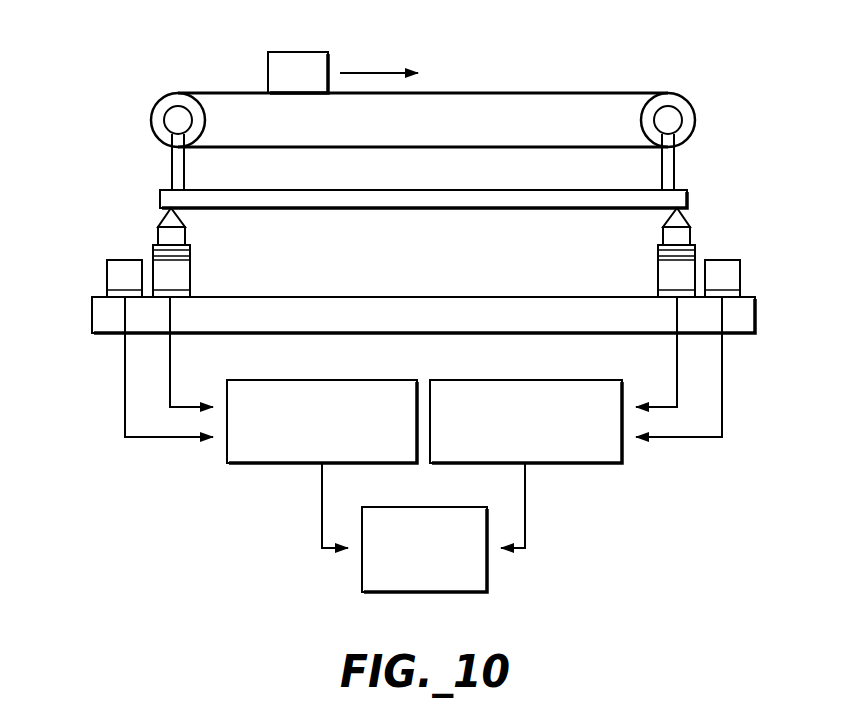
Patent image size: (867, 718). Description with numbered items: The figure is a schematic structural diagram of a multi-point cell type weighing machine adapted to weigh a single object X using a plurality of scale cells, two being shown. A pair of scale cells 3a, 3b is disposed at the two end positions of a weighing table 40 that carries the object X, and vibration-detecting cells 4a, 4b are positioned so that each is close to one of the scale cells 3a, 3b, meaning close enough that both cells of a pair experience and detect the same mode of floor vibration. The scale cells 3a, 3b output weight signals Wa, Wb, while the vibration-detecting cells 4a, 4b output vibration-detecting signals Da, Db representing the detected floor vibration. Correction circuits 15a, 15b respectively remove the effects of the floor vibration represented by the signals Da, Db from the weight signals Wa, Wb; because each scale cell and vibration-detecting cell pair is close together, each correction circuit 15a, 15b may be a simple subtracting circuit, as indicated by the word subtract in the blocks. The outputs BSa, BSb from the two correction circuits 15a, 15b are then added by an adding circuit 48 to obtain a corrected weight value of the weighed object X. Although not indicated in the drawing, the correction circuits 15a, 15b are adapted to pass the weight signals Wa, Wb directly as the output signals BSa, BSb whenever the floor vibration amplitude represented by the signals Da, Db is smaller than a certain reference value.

The weighed object X is at (308, 50).
The weighing table 40 is at (533, 190).
The scale cell 3a is at (178, 275).
The scale cell 3b is at (668, 275).
The vibration-detecting cell 4a is at (117, 260).
The vibration-detecting cell 4b is at (728, 260).
The weight signal Wa is at (178, 404).
The weight signal Wb is at (665, 404).
The vibration-detecting signal Da is at (123, 405).
The vibration-detecting signal Db is at (724, 405).
The correction circuit 15a is at (273, 380).
The correction circuit 15b is at (476, 380).
The output signal BSa is at (320, 508).
The output signal BSb is at (527, 508).
The adding circuit 48 is at (393, 507).